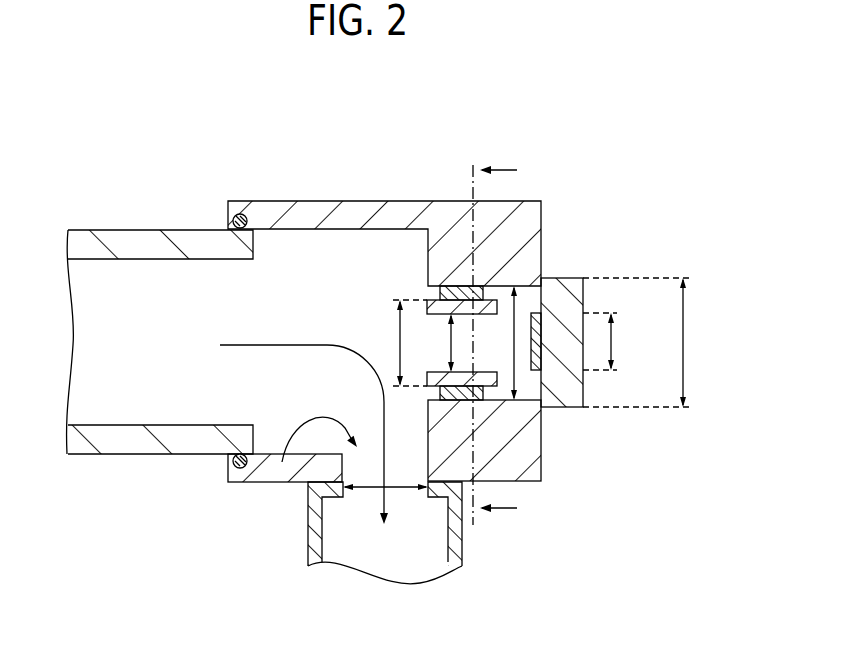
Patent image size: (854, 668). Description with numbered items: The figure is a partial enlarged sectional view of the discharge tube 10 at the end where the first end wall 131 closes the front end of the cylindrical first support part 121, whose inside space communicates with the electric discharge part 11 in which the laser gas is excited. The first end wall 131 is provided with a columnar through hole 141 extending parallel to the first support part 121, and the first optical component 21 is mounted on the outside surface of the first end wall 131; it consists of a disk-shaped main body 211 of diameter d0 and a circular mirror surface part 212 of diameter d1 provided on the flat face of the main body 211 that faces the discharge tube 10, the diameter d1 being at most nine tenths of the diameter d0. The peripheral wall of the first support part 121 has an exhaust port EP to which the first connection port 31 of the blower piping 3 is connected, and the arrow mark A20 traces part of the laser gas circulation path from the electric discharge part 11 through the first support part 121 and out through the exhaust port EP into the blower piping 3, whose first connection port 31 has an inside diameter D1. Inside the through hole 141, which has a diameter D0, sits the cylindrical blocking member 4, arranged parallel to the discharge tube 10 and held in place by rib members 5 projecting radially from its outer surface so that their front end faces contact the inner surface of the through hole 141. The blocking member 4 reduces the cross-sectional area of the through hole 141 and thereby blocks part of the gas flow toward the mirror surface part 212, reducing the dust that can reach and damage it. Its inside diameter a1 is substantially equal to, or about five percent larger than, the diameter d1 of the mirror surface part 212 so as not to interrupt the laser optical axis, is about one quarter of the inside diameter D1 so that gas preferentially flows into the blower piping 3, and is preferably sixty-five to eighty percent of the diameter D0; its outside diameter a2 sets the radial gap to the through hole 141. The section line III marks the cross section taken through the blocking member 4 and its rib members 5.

The discharge tube 10 is at (382, 289).
The electric discharge part 11 is at (145, 242).
The first support part 121 is at (310, 212).
The first end wall 131 is at (458, 212).
The through hole 141 is at (545, 290).
The blocking member 4 is at (432, 302).
The rib members 5 is at (448, 296).
The first optical component 21 is at (598, 317).
The main body 211 is at (563, 300).
The mirror surface part 212 is at (538, 345).
The blower piping 3 is at (423, 559).
The first connection port 31 is at (416, 508).
The arrow mark A20 is at (242, 345).
The exhaust port EP is at (282, 462).
The cross-section line III is at (516, 341).
The inside diameter of blocking member a1 is at (437, 343).
The outside diameter of blocking member a2 is at (398, 343).
The diameter of through hole D0 is at (500, 343).
The inside diameter of first connection port D1 is at (385, 505).
The diameter of main body d0 is at (648, 342).
The diameter of mirror surface part d1 is at (613, 341).